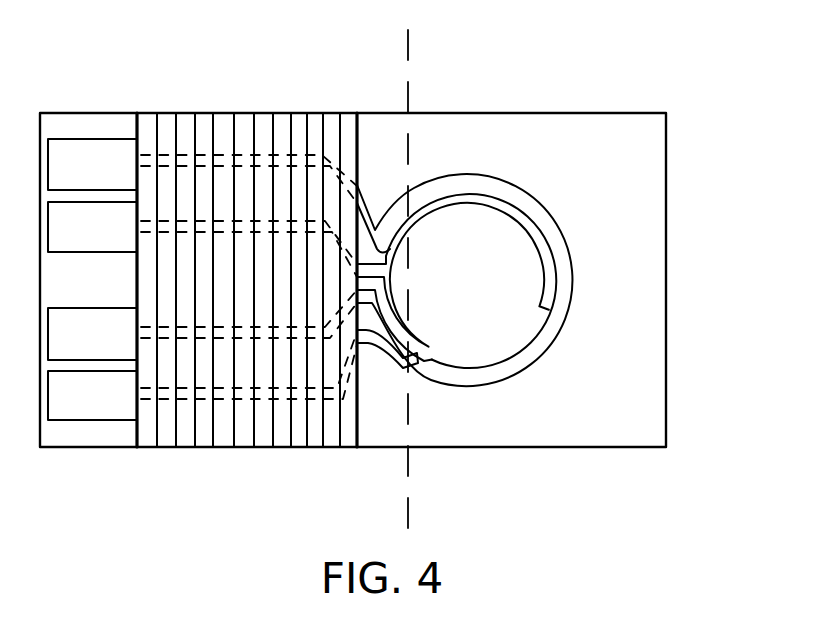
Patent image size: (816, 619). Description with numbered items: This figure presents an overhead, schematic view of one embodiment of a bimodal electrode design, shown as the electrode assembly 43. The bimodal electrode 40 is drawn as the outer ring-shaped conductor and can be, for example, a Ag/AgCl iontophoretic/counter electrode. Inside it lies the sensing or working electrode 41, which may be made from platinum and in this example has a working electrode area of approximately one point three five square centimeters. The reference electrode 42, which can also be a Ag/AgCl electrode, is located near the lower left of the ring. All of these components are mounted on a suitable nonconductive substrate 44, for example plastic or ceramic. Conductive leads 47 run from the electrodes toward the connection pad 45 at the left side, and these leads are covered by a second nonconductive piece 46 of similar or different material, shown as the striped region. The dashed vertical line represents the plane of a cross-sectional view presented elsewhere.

The bimodal electrode 40 is at (521, 188).
The sensing or working electrode 41 is at (549, 310).
The reference electrode 42 is at (408, 346).
The electrode assembly 43 is at (442, 110).
The nonconductive substrate 44 is at (637, 225).
The connection pad 45 is at (83, 138).
The second nonconductive piece 46 is at (205, 133).
The conductive leads 47 is at (164, 395).